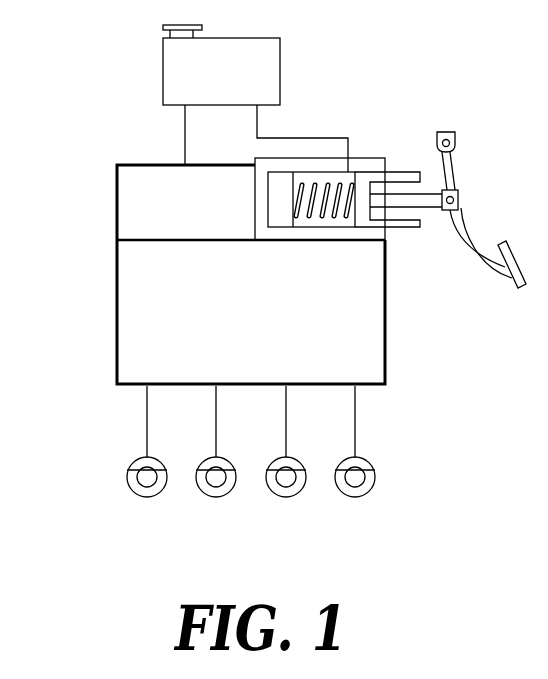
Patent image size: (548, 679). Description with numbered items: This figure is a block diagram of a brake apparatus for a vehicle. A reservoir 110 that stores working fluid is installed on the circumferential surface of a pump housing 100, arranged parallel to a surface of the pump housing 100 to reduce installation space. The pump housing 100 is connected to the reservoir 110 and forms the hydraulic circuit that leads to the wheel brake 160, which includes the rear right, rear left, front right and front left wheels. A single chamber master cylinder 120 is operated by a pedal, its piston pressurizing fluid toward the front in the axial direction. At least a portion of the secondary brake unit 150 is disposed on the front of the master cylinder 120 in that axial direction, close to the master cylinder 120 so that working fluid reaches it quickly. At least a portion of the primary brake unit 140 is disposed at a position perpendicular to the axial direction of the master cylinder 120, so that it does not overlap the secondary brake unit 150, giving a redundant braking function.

The pump housing 100 is at (88, 138).
The reservoir 110 is at (162, 73).
The single chamber master cylinder 120 is at (323, 185).
The primary brake unit 140 is at (386, 352).
The secondary brake unit 150 is at (117, 200).
The wheel brake 160 is at (132, 457).